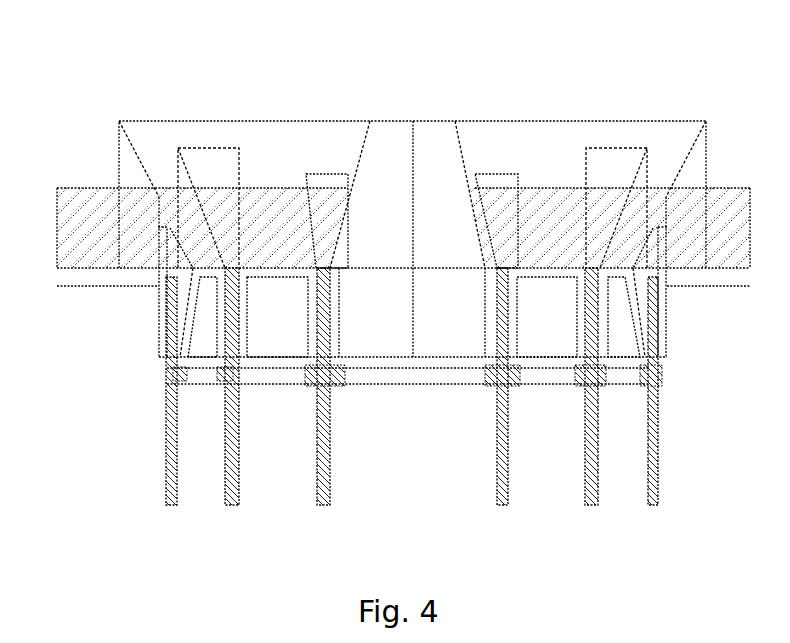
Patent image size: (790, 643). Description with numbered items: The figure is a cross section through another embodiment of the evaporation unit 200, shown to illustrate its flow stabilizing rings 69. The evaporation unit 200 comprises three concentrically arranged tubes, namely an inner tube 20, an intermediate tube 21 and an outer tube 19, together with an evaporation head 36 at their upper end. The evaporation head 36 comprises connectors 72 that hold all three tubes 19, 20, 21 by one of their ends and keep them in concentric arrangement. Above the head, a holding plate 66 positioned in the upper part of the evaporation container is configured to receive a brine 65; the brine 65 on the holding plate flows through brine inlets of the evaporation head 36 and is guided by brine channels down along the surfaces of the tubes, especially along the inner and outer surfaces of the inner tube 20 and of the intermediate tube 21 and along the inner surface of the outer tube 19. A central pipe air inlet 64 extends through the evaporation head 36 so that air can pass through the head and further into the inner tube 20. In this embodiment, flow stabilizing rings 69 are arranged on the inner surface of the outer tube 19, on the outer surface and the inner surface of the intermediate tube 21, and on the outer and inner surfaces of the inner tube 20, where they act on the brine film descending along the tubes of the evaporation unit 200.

The evaporation head 36 is at (540, 121).
The central pipe air inlet 64 is at (422, 158).
The brine 65 is at (725, 212).
The holding plate 66 is at (703, 282).
The connectors 72 is at (159, 323).
The flow stabilizing rings 69 is at (227, 387).
The outer tube 19 is at (170, 463).
The intermediate tube 21 is at (232, 463).
The inner tube 20 is at (322, 463).
The evaporation unit 200 is at (677, 517).